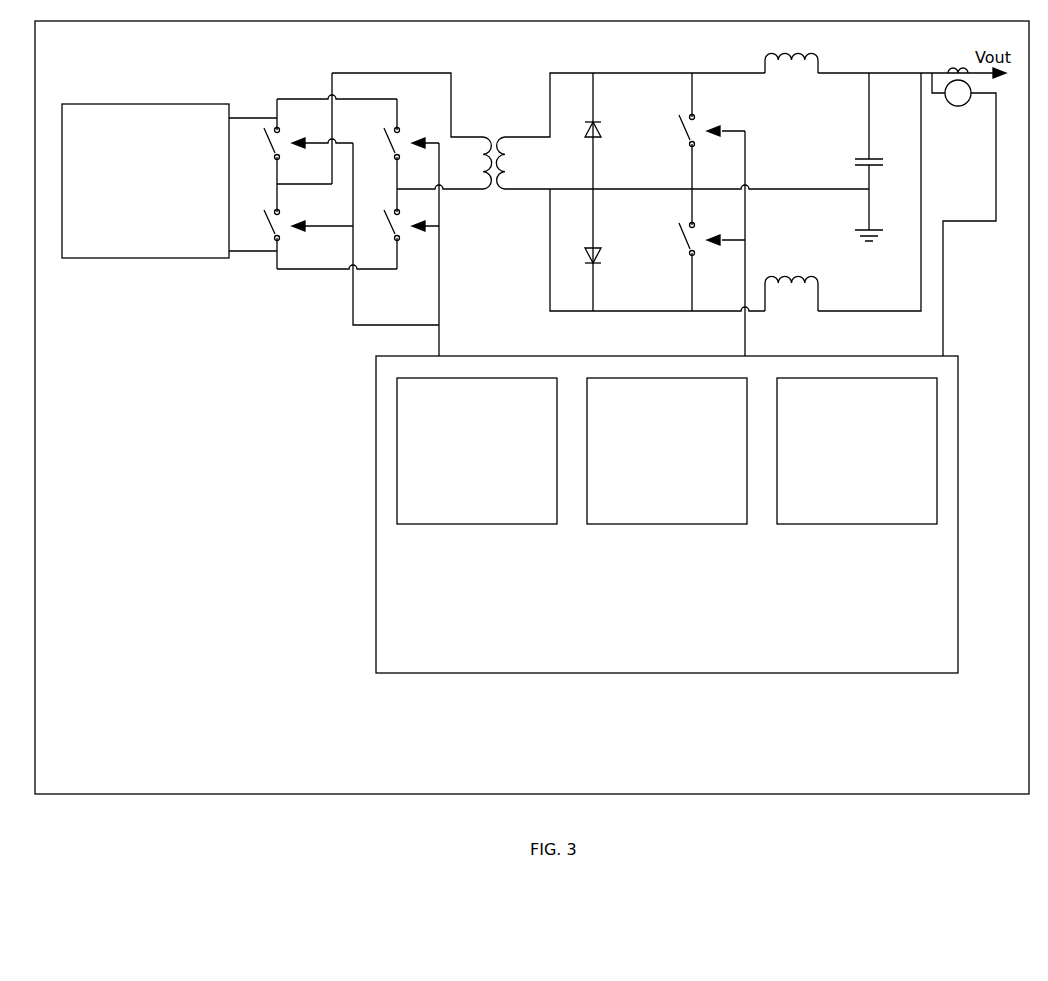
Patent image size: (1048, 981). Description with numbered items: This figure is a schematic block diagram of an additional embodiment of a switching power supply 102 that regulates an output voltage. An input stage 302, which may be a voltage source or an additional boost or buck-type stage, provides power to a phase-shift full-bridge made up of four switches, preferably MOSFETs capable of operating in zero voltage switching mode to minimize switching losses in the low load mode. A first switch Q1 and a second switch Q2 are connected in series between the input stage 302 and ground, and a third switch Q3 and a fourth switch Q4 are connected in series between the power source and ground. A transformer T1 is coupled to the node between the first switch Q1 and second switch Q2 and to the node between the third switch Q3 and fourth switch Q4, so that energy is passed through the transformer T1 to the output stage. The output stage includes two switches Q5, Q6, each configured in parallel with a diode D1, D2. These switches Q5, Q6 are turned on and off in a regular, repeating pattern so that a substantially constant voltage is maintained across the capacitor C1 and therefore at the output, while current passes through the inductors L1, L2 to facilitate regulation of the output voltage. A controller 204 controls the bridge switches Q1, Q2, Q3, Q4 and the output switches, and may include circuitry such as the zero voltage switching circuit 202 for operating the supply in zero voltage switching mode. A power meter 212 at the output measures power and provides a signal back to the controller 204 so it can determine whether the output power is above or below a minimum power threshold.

The switching power supply 102 is at (516, 782).
The input stage 302 is at (130, 201).
The zero voltage switching circuit 202 is at (462, 483).
The controller 204 is at (652, 661).
The power meter 212 is at (952, 106).
The first switch Q1 is at (287, 139).
The second switch Q2 is at (287, 220).
The third switch Q3 is at (408, 139).
The fourth switch Q4 is at (408, 220).
The switch Q5 is at (702, 136).
The switch Q6 is at (700, 246).
The diode D1 is at (607, 192).
The diode D2 is at (607, 259).
The transformer T1 is at (495, 148).
The inductor L1 is at (791, 50).
The inductor L2 is at (791, 284).
The capacitor C1 is at (863, 157).